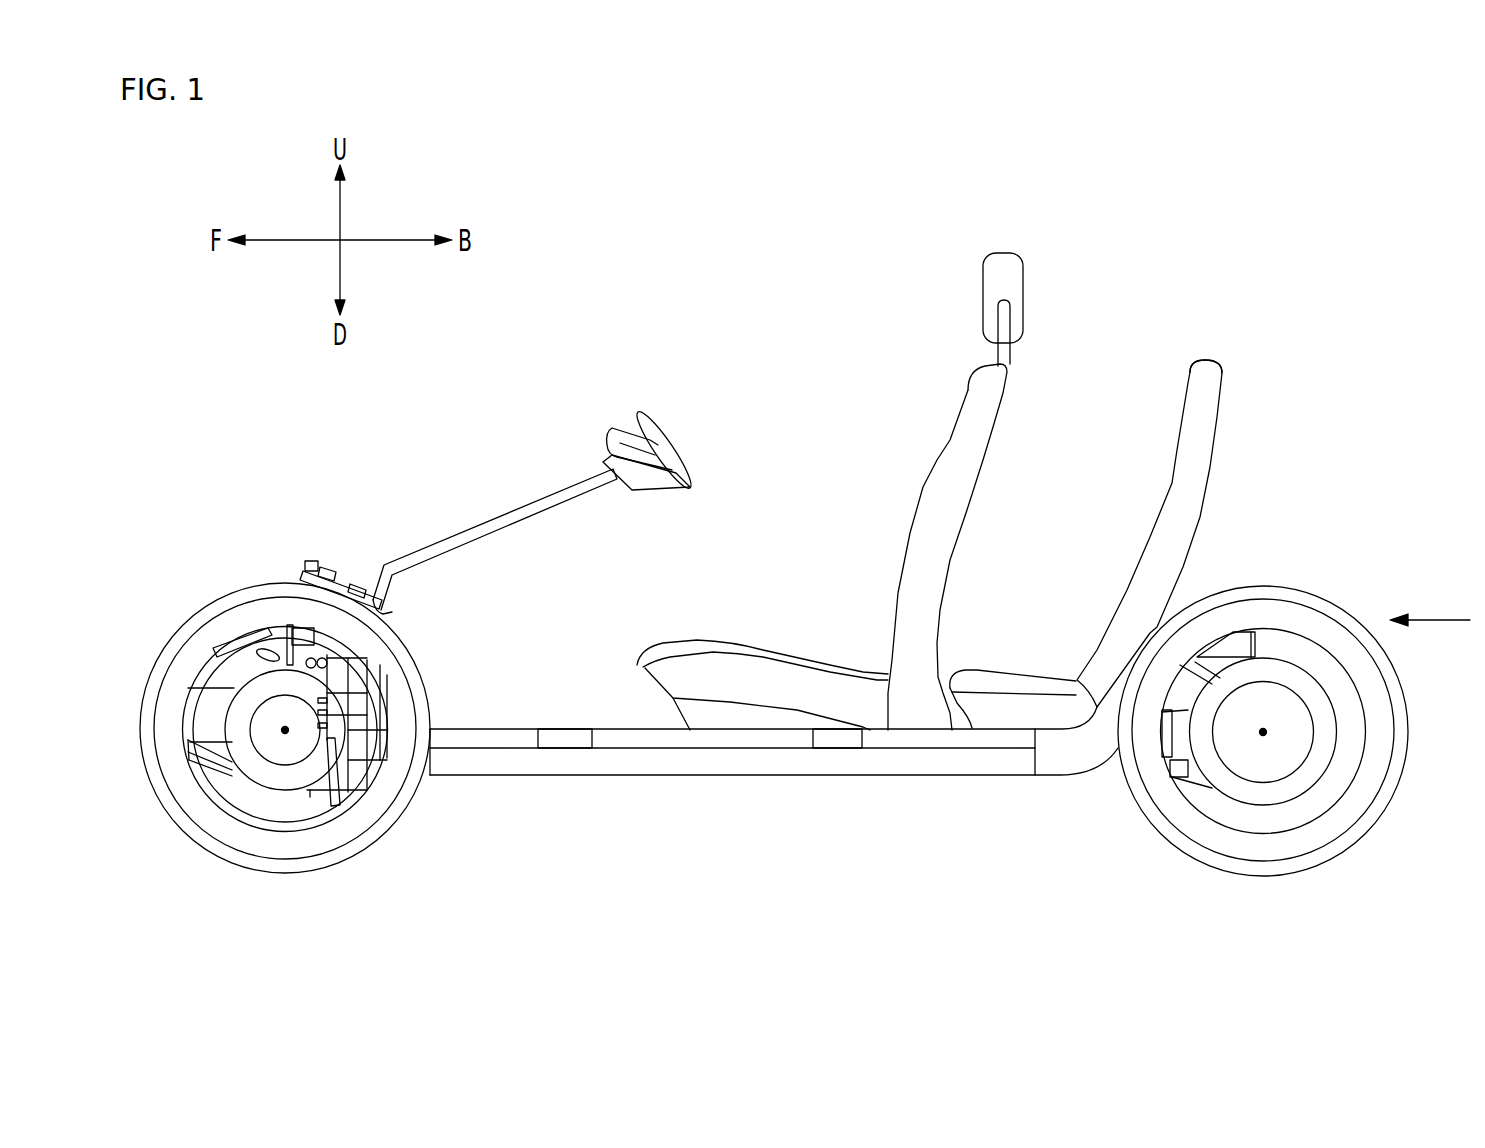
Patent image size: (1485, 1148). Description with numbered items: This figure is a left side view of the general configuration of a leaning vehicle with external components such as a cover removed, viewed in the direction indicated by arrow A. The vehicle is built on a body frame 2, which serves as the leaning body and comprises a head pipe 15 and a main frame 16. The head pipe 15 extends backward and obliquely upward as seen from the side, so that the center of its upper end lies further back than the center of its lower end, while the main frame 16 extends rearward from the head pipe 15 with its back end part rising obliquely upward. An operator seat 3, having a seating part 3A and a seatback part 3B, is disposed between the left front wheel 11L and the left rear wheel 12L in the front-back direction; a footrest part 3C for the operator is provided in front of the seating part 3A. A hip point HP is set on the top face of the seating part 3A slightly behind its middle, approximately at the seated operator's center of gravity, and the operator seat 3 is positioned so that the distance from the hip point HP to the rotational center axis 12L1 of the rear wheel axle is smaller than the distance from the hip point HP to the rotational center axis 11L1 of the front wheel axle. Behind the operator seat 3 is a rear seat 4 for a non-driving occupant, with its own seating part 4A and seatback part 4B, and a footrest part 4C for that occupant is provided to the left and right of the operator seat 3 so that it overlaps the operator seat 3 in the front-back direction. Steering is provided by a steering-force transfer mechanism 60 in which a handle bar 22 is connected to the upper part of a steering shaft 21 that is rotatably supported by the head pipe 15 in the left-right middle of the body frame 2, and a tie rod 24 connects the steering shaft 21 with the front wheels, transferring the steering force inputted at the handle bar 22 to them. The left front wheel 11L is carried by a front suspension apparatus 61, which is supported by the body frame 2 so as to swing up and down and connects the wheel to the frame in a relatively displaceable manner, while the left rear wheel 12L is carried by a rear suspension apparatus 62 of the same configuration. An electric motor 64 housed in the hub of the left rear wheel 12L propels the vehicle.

The body frame 2 is at (512, 760).
The operator seat 3 is at (968, 392).
The seating part 3A is at (712, 638).
The seatback part 3B is at (1012, 370).
The footrest part 3C is at (577, 728).
The rear seat 4 is at (1185, 388).
The seating part 4A is at (1015, 673).
The seatback part 4B is at (1213, 417).
The footrest part 4C is at (838, 752).
The left front wheel 11L is at (190, 633).
The rotational center axis 11L1 is at (286, 735).
The left rear wheel 12L is at (1345, 640).
The rotational center axis 12L1 is at (1264, 738).
The head pipe 15 is at (392, 616).
The main frame 16 is at (665, 760).
The steering shaft 21 is at (503, 522).
The handle bar 22 is at (672, 440).
The tie rod 24 is at (328, 652).
The steering-force transfer mechanism 60 is at (528, 473).
The front suspension apparatus 61 is at (268, 620).
The rear suspension apparatus 62 is at (1276, 640).
The electric motor 64 is at (1297, 798).
The hip point HP is at (845, 664).
The view direction arrow A is at (1430, 606).